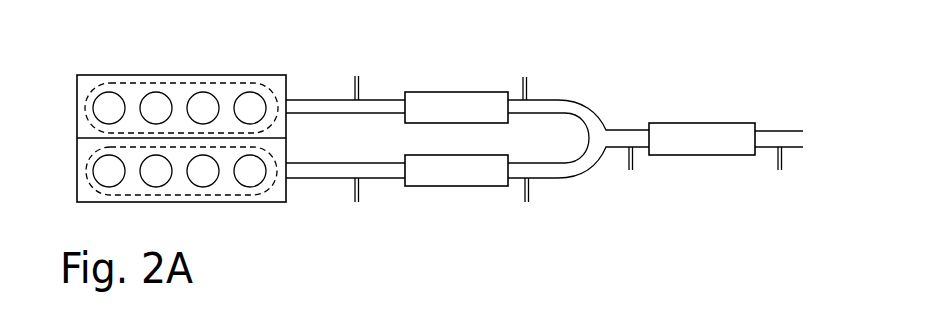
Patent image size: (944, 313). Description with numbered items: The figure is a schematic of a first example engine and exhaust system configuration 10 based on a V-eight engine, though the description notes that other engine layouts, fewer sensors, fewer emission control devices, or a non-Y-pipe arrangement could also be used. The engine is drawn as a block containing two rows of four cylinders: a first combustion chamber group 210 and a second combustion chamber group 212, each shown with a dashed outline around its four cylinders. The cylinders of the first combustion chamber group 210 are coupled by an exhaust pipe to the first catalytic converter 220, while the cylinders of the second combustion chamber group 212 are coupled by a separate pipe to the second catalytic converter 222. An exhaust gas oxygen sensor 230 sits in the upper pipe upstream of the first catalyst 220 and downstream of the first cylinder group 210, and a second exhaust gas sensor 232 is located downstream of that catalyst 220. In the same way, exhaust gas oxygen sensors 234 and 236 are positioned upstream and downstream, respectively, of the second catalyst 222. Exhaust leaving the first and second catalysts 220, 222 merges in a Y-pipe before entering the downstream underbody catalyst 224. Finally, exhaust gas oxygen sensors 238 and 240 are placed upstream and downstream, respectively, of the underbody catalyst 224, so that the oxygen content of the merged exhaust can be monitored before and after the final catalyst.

The engine exhaust system 10 is at (114, 37).
The first combustion chamber group 210 is at (205, 82).
The second combustion chamber group 212 is at (205, 195).
The first catalytic converter 220 is at (456, 107).
The second catalytic converter 222 is at (456, 170).
The underbody catalyst 224 is at (702, 139).
The exhaust gas oxygen sensor 230 is at (358, 76).
The second exhaust gas sensor 232 is at (526, 77).
The exhaust gas oxygen sensor 234 is at (358, 202).
The exhaust gas oxygen sensor 236 is at (528, 202).
The exhaust gas oxygen sensor 238 is at (632, 170).
The exhaust gas oxygen sensor 240 is at (782, 170).